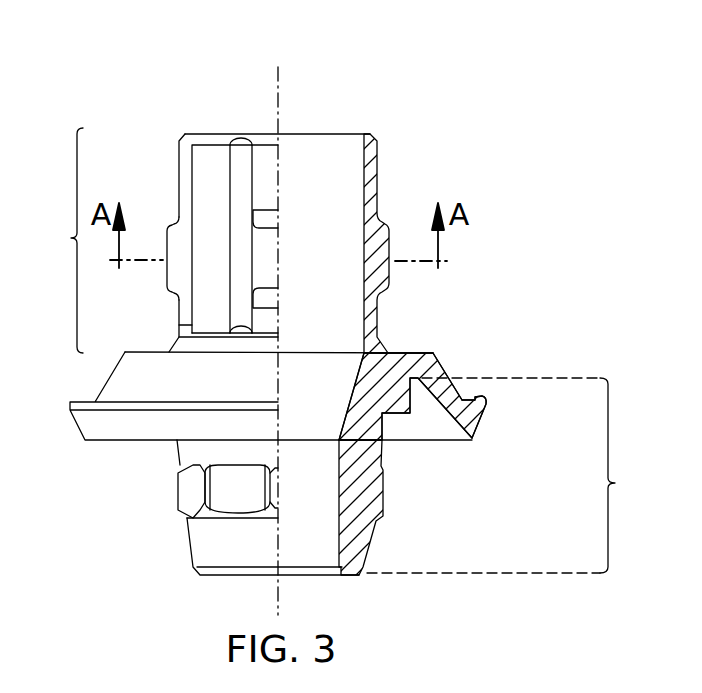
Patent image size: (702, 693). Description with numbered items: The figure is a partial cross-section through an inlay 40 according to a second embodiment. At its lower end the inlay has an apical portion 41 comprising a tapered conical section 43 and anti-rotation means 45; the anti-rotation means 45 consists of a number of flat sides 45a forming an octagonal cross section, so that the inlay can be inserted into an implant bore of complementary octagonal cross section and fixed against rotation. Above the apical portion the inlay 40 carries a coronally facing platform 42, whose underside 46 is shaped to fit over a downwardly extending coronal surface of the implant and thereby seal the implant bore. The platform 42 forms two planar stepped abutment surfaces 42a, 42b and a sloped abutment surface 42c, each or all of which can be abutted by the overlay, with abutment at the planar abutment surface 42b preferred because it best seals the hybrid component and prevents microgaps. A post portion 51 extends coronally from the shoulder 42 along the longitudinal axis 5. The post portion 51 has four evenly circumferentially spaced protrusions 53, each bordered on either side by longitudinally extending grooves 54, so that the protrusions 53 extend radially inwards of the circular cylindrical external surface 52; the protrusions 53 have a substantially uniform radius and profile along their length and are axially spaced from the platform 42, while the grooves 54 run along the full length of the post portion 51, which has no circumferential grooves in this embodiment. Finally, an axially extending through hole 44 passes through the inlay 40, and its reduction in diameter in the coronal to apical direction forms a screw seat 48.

The longitudinal axis 5 is at (280, 102).
The inlay 40 is at (515, 213).
The apical portion 41 is at (510, 475).
The platform 42 is at (112, 368).
The planar stepped abutment surface 42a is at (413, 353).
The planar stepped abutment surface 42b is at (485, 395).
The sloped abutment surface 42c is at (446, 375).
The tapered conical section 43 is at (381, 460).
The through hole 44 is at (335, 143).
The anti-rotation means 45 is at (383, 497).
The flat sides 45a is at (260, 503).
The underside 46 is at (427, 410).
The screw seat 48 is at (352, 383).
The post portion 51 is at (60, 240).
The circular cylindrical external surface 52 is at (380, 176).
The protrusions 53 is at (167, 238).
The grooves 54 is at (242, 133).